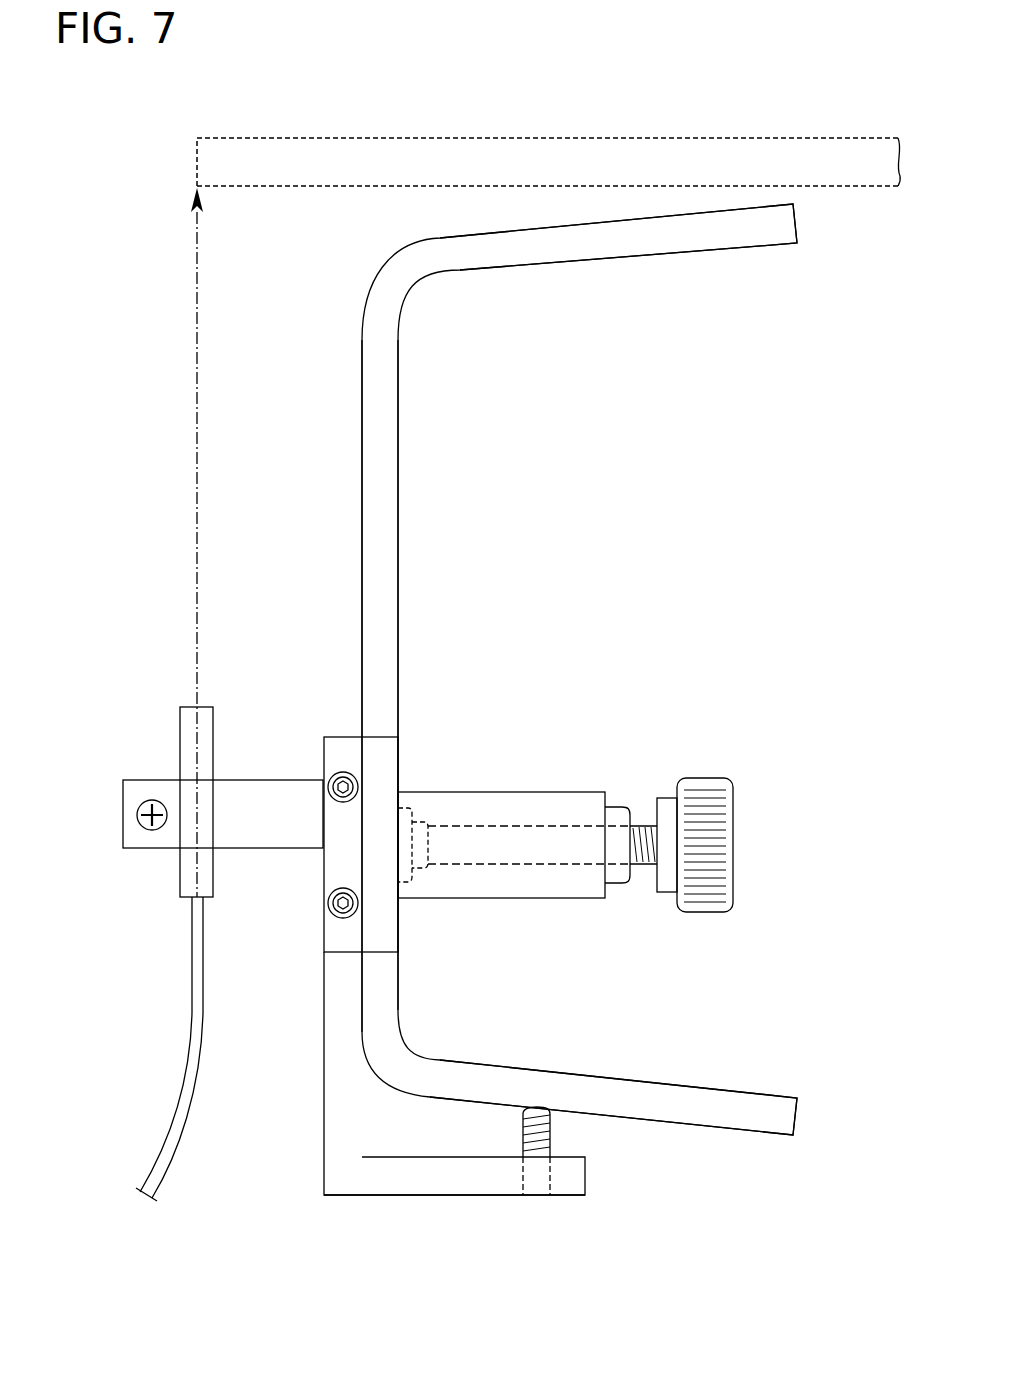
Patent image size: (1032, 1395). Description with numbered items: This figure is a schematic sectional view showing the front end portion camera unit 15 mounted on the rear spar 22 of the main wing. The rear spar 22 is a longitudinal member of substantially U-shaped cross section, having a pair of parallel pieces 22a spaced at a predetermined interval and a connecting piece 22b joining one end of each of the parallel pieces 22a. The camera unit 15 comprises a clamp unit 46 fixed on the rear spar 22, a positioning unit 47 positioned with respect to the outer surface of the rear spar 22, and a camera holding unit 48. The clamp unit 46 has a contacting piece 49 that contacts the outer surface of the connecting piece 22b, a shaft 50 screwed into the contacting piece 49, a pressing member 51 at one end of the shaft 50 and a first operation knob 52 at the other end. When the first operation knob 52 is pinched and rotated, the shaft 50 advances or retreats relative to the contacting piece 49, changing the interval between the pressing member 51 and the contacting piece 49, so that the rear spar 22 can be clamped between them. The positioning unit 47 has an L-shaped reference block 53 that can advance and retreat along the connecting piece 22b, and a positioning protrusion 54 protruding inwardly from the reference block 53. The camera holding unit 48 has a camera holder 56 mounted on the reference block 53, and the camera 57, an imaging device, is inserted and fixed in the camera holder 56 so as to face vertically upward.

The front end portion camera unit 15 is at (583, 728).
The rear spar 22 is at (332, 432).
The parallel pieces 22a is at (622, 262).
The connecting piece 22b is at (362, 568).
The clamp unit 46 is at (437, 792).
The positioning unit 47 is at (458, 1212).
The camera holding unit 48 is at (146, 858).
The contacting piece 49 is at (343, 737).
The shaft 50 is at (630, 826).
The pressing member 51 is at (415, 870).
The first operation knob 52 is at (700, 912).
The reference block 53 is at (370, 1197).
The positioning protrusion 54 is at (550, 1140).
The camera holder 56 is at (155, 780).
The camera 57 is at (215, 738).